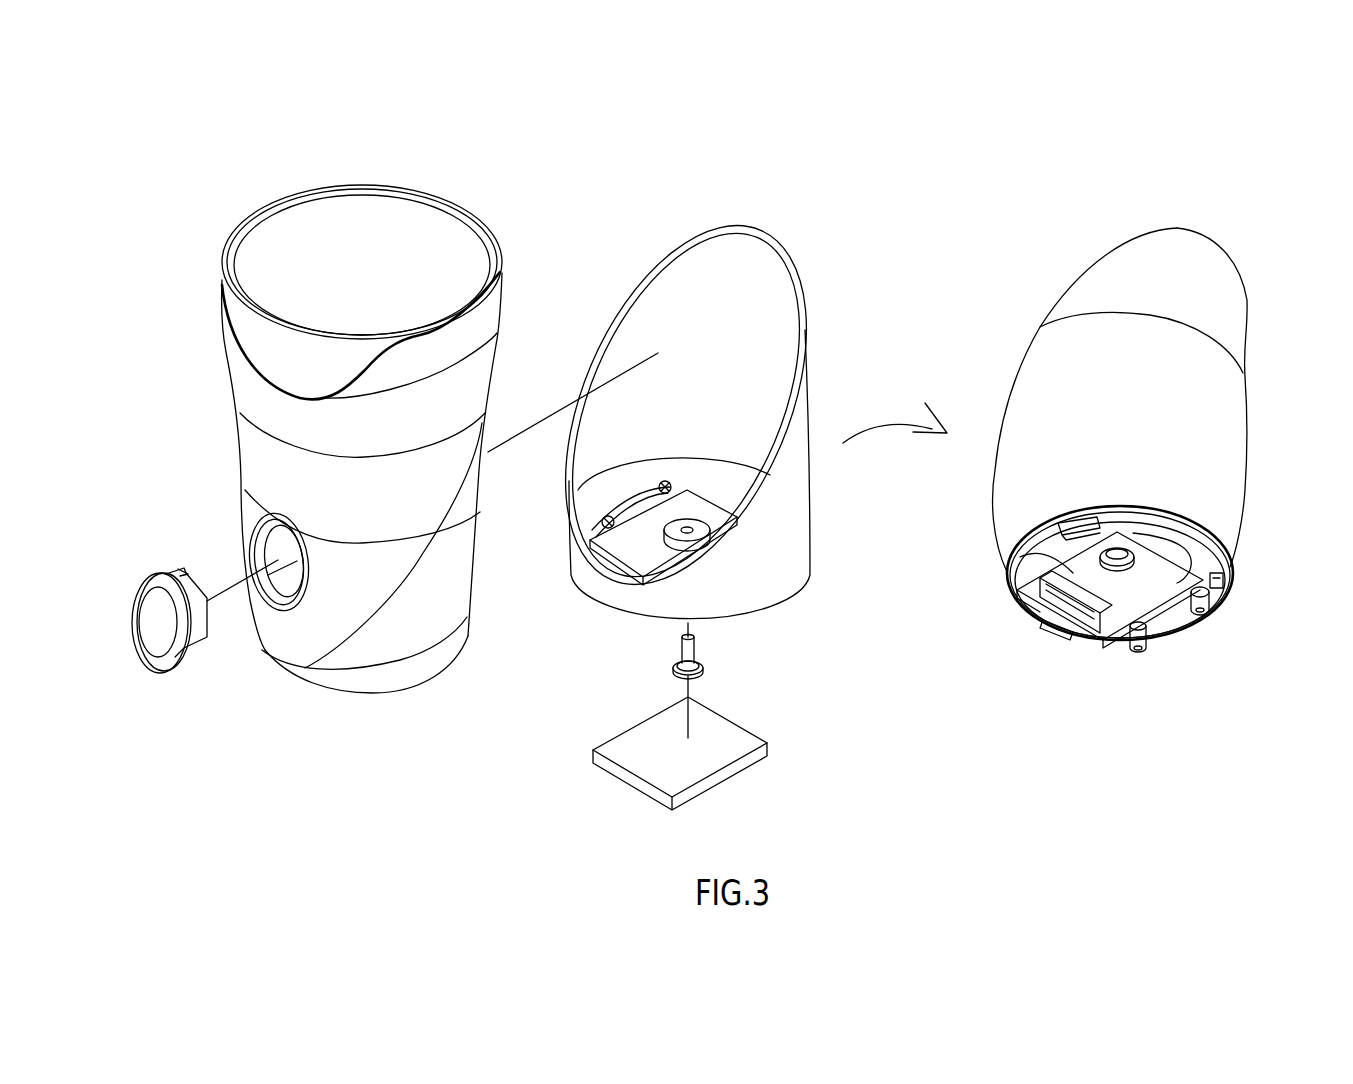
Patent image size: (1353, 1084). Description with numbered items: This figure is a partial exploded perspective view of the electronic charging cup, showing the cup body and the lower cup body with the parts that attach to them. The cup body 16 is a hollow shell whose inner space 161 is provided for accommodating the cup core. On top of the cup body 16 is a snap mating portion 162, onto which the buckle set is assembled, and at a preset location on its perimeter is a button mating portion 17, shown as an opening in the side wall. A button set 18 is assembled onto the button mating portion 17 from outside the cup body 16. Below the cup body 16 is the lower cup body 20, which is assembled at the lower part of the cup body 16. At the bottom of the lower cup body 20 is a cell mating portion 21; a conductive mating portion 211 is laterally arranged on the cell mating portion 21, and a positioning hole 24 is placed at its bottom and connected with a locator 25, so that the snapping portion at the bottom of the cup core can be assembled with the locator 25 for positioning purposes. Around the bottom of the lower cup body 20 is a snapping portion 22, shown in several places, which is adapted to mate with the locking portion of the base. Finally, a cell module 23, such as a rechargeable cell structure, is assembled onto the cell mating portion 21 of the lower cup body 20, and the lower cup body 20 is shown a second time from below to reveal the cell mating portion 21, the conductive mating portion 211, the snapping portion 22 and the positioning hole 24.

The cup body 16 is at (240, 447).
The inner space 161 is at (418, 252).
The snap mating portion 162 is at (253, 220).
The button mating portion 17 is at (253, 523).
The button set 18 is at (143, 580).
The lower cup body 20 is at (811, 550).
The cell mating portion 21 is at (1080, 577).
The conductive mating portion 211 is at (1043, 590).
The snapping portion 22 is at (1080, 513).
The cell module 23 is at (747, 727).
The positioning hole 24 is at (1130, 557).
The locator 25 is at (703, 667).